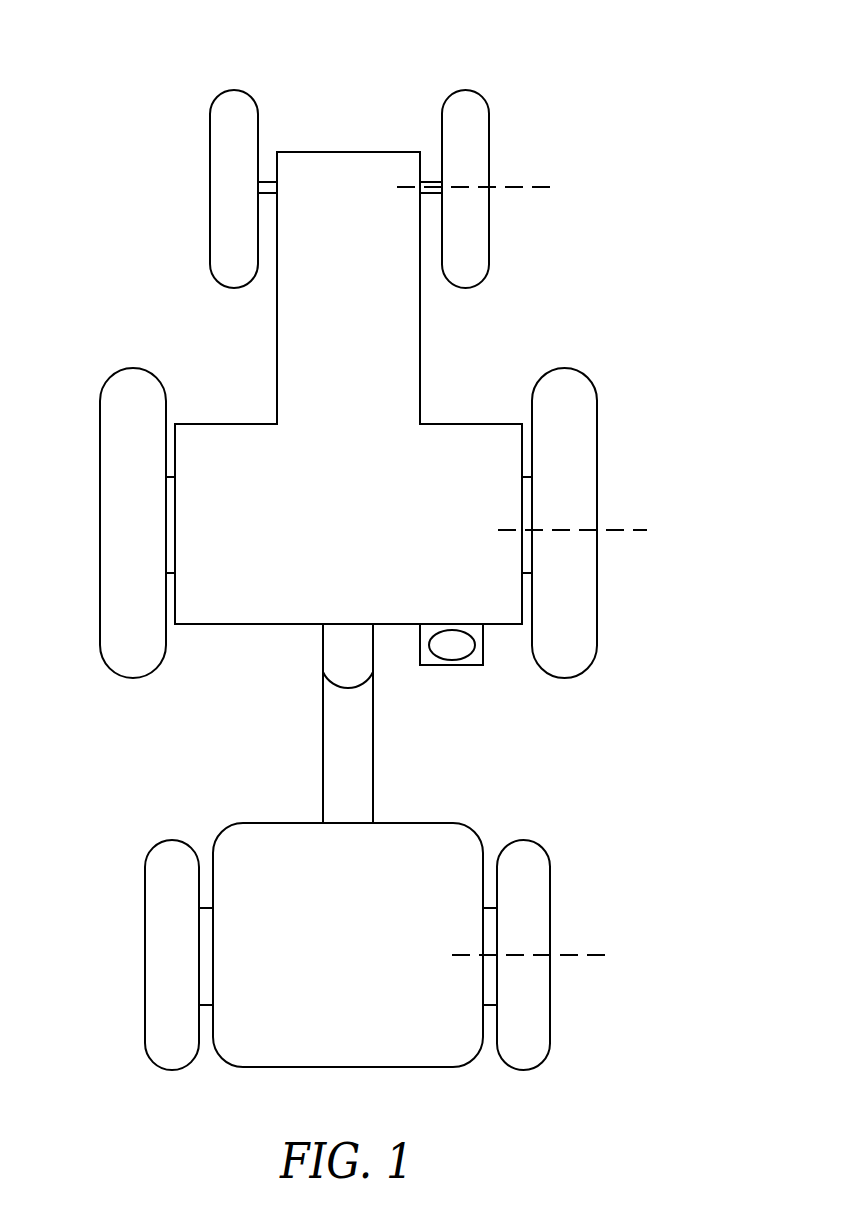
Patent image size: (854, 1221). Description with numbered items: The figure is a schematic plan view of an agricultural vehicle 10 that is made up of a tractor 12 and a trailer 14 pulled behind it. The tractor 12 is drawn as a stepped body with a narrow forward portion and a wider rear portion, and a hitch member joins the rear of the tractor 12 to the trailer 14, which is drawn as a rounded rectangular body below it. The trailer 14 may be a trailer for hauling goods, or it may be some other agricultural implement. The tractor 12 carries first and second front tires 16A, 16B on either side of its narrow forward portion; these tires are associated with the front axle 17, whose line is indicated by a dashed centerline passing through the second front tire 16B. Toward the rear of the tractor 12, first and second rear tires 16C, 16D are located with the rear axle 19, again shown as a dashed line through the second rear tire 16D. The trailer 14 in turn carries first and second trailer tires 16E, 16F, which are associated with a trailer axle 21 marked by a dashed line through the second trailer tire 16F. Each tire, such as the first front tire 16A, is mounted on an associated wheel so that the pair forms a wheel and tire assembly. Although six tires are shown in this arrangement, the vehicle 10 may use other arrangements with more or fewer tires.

The vehicle 10 is at (360, 609).
The tractor 12 is at (392, 390).
The trailer 14 is at (445, 827).
The first front tire 16A is at (233, 103).
The second front tire 16B is at (465, 103).
The first rear tire 16C is at (130, 380).
The second rear tire 16D is at (563, 380).
The first trailer tire 16E is at (167, 853).
The second trailer tire 16F is at (527, 853).
The front axle 17 is at (527, 185).
The rear axle 19 is at (623, 530).
The trailer axle 21 is at (578, 953).